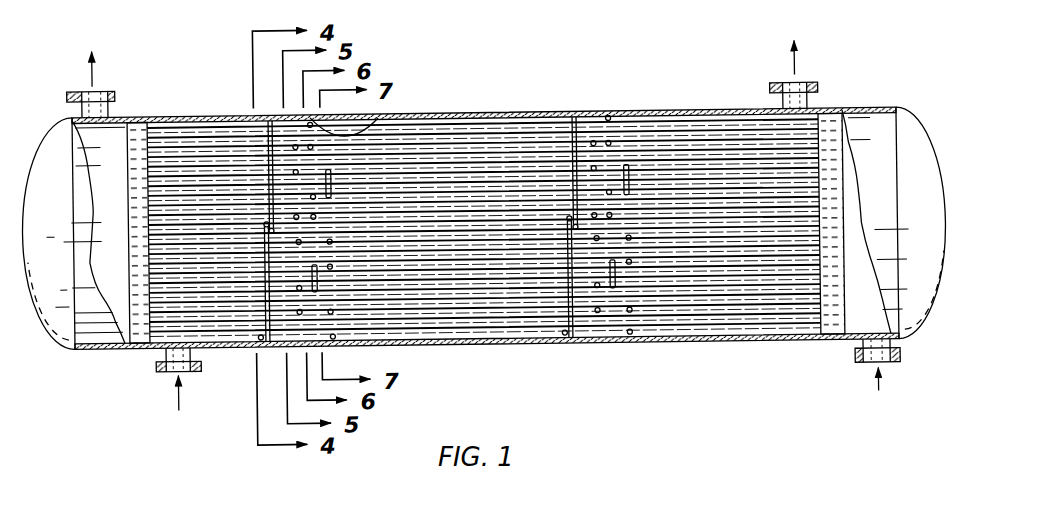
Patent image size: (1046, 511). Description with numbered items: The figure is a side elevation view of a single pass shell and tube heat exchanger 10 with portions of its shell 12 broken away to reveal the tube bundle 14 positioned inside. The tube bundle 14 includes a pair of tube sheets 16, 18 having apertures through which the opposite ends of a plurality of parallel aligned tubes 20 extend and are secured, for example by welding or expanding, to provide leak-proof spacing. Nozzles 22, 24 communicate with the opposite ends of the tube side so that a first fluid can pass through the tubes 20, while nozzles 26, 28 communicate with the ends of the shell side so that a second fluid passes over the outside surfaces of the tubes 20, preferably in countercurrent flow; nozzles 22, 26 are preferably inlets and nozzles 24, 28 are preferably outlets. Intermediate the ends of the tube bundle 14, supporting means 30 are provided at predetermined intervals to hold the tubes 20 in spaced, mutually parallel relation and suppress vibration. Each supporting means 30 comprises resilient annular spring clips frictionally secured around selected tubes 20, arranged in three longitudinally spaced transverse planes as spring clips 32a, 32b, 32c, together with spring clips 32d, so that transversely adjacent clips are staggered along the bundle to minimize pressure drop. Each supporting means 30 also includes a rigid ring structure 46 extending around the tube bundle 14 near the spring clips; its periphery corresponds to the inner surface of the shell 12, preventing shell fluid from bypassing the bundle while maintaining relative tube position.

The single pass shell and tube heat exchanger 10 is at (872, 111).
The shell 12 is at (718, 121).
The tube bundle 14 is at (483, 212).
The tube sheet 16 is at (138, 125).
The tube sheet 18 is at (826, 127).
The tubes 20 is at (532, 206).
The nozzle 22 is at (884, 373).
The nozzle 24 is at (83, 96).
The nozzle 26 is at (184, 373).
The nozzle 28 is at (803, 91).
The supporting means 30 is at (338, 130).
The spring clips 32a is at (272, 150).
The spring clips 32b is at (333, 173).
The spring clips 32c is at (338, 181).
The baffle 32d is at (600, 177).
The ring structure 46 is at (265, 122).